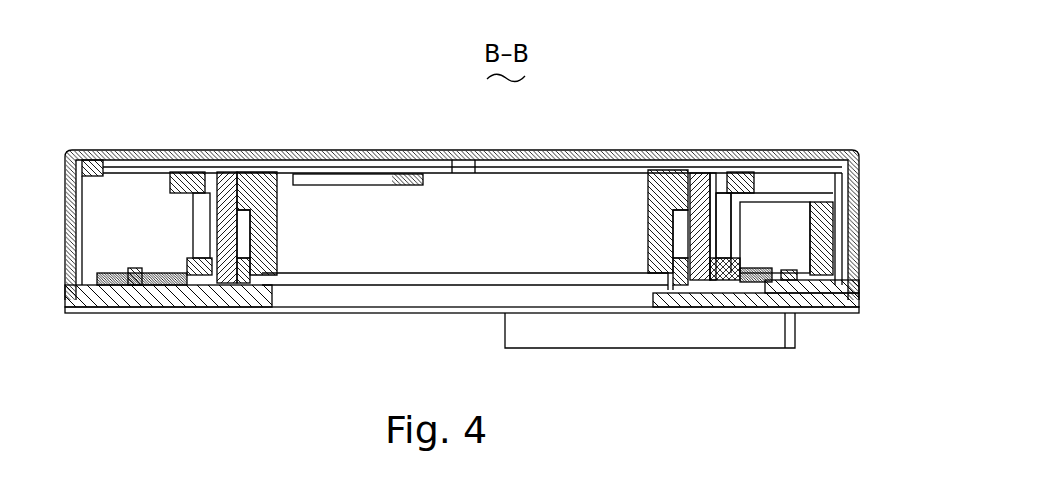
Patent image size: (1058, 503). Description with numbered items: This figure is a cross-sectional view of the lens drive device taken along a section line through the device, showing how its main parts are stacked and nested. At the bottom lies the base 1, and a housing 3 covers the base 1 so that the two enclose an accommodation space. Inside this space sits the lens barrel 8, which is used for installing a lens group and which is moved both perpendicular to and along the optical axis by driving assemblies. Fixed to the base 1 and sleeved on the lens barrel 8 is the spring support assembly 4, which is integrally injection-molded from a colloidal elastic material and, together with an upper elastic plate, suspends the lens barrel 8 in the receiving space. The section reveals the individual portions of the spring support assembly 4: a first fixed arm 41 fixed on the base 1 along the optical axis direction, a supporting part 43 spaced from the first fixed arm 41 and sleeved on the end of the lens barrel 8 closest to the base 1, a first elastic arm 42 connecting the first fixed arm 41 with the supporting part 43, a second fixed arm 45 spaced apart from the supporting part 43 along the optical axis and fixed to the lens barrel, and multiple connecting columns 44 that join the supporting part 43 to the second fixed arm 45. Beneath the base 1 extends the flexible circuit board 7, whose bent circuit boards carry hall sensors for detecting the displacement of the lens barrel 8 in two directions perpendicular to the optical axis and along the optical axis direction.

The base 1 is at (93, 307).
The housing 3 is at (95, 150).
The spring support assembly 4 is at (805, 188).
The flexible circuit board 7 is at (737, 333).
The lens barrel 8 is at (280, 172).
The first fixed arm 41 is at (833, 255).
The first elastic arm 42 is at (742, 262).
The supporting part 43 is at (737, 215).
The connecting columns 44 is at (717, 195).
The second fixed arm 45 is at (692, 172).